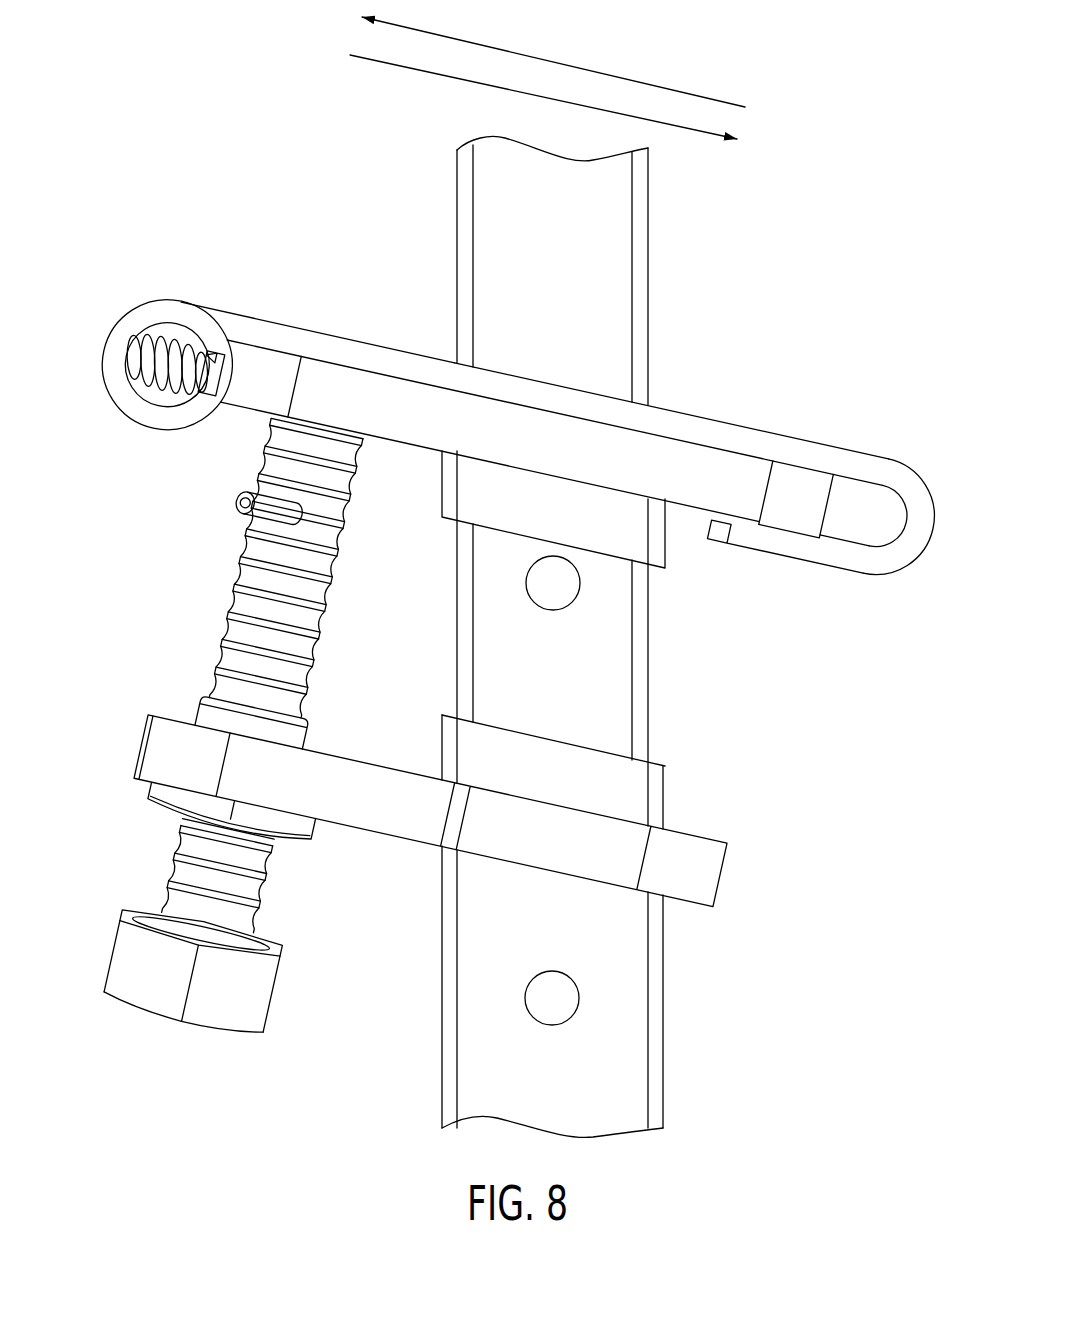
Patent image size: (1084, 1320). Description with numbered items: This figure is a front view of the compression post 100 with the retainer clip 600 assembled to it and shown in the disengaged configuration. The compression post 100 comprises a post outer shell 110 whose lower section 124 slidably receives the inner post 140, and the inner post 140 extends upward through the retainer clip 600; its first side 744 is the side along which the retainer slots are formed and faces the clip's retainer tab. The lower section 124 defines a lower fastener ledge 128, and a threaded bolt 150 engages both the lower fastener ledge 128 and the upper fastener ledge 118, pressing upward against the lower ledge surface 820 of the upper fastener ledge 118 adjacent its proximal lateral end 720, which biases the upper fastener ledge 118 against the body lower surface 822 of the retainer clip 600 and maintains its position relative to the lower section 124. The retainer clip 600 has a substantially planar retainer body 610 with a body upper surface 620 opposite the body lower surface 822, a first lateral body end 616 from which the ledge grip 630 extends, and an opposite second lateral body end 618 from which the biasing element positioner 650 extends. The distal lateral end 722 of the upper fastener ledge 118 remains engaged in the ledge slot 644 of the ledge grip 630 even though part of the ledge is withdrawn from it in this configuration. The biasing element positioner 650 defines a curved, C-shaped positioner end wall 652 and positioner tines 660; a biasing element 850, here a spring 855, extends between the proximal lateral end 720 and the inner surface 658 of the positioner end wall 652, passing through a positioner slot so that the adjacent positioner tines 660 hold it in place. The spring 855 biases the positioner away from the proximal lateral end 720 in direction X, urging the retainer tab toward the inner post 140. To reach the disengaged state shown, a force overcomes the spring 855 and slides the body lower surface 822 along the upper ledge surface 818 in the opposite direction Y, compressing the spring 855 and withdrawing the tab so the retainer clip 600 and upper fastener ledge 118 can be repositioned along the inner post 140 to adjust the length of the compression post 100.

The compression post 100 is at (155, 106).
The post outer shell 110 is at (694, 985).
The upper fastener ledge 118 is at (740, 474).
The lower section 124 is at (640, 1056).
The lower fastener ledge 128 is at (700, 880).
The inner post 140 is at (624, 238).
The threaded bolt 150 is at (236, 638).
The retainer clip 600 is at (707, 437).
The retainer body 610 is at (430, 370).
The first lateral body end 616 is at (877, 474).
The second lateral body end 618 is at (194, 316).
The body upper surface 620 is at (569, 383).
The ledge grip 630 is at (942, 516).
The ledge slot 644 is at (863, 519).
The biasing element positioner 650 is at (100, 318).
The positioner end wall 652 is at (104, 354).
The inner surface 658 is at (137, 345).
The positioner tines 660 is at (214, 368).
The proximal lateral end 720 is at (250, 366).
The distal lateral end 722 is at (807, 491).
The first side 744 is at (656, 292).
The upper ledge surface 818 is at (363, 360).
The lower ledge surface 820 is at (391, 452).
The body lower surface 822 is at (676, 447).
The biasing element 850 is at (190, 396).
The spring 855 is at (148, 360).